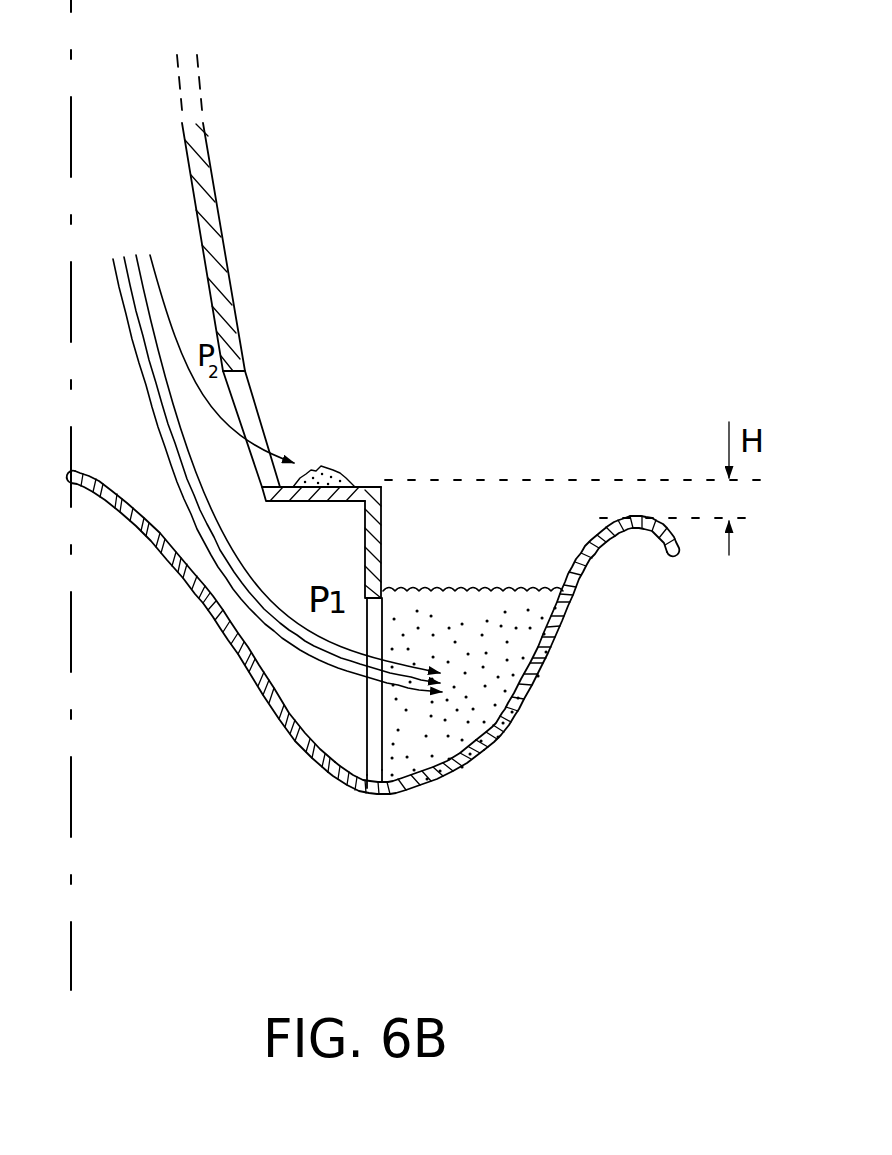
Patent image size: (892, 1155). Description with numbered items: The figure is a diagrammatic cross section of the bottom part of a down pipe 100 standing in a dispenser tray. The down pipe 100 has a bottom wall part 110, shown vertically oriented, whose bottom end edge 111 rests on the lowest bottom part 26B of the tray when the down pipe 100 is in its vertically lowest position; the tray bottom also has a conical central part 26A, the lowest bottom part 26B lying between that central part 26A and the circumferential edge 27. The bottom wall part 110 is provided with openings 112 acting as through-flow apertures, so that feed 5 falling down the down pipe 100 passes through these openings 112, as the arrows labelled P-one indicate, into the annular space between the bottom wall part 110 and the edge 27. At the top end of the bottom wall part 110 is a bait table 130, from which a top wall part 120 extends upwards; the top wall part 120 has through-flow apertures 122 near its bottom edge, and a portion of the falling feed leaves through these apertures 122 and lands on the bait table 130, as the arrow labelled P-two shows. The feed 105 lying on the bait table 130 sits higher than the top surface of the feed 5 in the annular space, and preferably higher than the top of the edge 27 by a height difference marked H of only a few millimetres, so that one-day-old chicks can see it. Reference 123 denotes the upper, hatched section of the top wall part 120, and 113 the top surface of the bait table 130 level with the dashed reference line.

The down pipe 100 is at (403, 75).
The top wall part 120 is at (402, 205).
The inlet conduit 123 is at (222, 245).
The through-flow apertures 122 is at (248, 406).
The feed lying on the bait table 105 is at (324, 463).
The bait table 130 is at (380, 604).
The weir top plate 113 is at (383, 482).
The bottom wall part 110 is at (383, 547).
The openings 112 is at (377, 737).
The bottom end edge 111 is at (373, 786).
The feed 5 is at (489, 598).
The conical central part 26A is at (207, 622).
The lowest bottom part 26B is at (390, 795).
The edge 27 is at (600, 552).